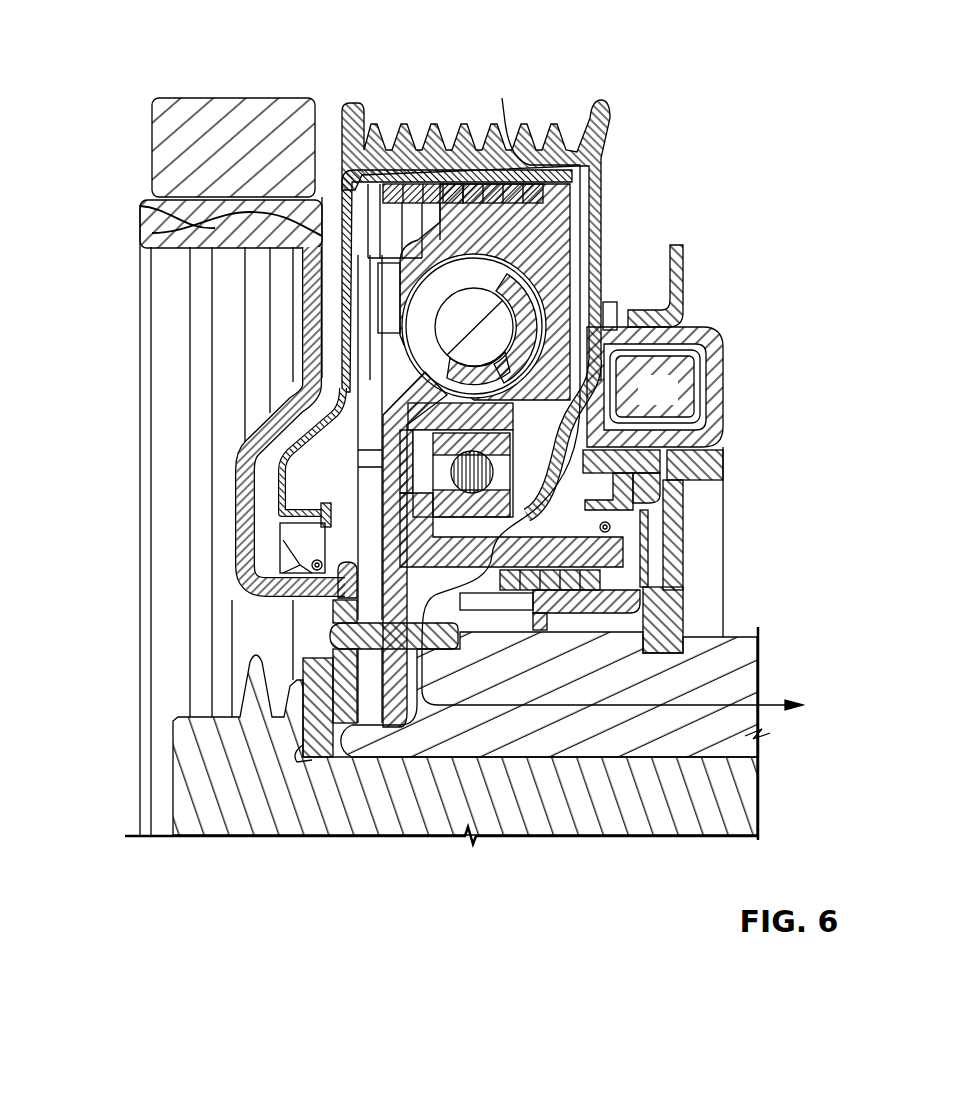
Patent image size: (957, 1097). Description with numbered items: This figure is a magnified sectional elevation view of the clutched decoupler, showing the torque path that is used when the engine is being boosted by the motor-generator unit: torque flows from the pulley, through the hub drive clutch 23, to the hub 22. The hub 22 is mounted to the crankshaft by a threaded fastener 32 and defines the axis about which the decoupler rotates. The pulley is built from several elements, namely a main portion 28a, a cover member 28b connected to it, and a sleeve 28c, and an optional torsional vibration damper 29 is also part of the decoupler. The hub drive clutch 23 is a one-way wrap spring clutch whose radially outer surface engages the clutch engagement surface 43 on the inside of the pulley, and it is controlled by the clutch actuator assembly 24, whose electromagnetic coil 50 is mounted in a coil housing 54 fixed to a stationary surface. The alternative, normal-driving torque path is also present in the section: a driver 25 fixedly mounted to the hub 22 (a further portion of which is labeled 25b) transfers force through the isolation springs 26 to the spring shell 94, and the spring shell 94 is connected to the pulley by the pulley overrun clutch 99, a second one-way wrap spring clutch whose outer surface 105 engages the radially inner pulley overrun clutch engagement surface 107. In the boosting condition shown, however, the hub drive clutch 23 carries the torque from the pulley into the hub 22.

The torsional vibration damper 29 is at (190, 105).
The pulley overrun clutch engagement surface 107 is at (402, 207).
The outer surface 105 is at (468, 187).
The main portion 28a is at (600, 108).
The spring shell 94 is at (553, 247).
The isolation springs 26 is at (527, 308).
The clutch actuator assembly 24 is at (712, 292).
The coil housing 54 is at (708, 346).
The electromagnetic coil 50 is at (690, 393).
The pulley overrun clutch 99 is at (387, 203).
The cover member 28b is at (340, 377).
The bracket 25b is at (402, 400).
The driver 25 is at (363, 563).
The sleeve 28c is at (607, 557).
The hub drive clutch 23 is at (567, 617).
The hub 22 is at (745, 690).
The clutch engagement surface 43 is at (603, 615).
The threaded fastener 32 is at (743, 817).